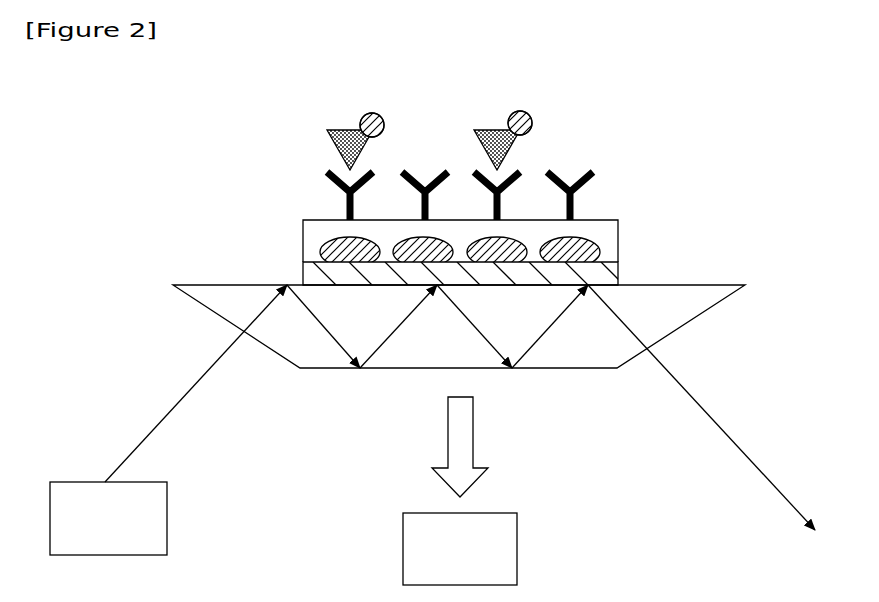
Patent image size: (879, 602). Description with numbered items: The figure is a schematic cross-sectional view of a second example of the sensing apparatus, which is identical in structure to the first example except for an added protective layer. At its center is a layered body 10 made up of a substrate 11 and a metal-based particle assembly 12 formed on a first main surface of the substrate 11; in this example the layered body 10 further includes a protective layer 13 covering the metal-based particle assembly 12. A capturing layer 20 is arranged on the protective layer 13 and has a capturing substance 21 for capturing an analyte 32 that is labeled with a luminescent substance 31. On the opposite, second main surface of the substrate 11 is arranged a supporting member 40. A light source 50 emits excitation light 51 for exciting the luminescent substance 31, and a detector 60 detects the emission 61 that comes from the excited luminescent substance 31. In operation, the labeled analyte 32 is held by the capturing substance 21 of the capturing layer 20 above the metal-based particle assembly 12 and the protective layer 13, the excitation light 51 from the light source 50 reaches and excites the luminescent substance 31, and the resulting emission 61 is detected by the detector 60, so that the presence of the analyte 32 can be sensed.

The layered body 10 is at (507, 248).
The substrate 11 is at (615, 277).
The metal-based particle assembly 12 is at (597, 250).
The protective layer 13 is at (608, 228).
The capturing layer 20 is at (530, 152).
The capturing substance 21 is at (588, 170).
The luminescent substance 31 is at (381, 113).
The analyte 32 is at (340, 128).
The supporting member 40 is at (677, 318).
The light source 50 is at (157, 517).
The excitation light 51 is at (183, 400).
The detector 60 is at (507, 548).
The emission 61 is at (463, 427).